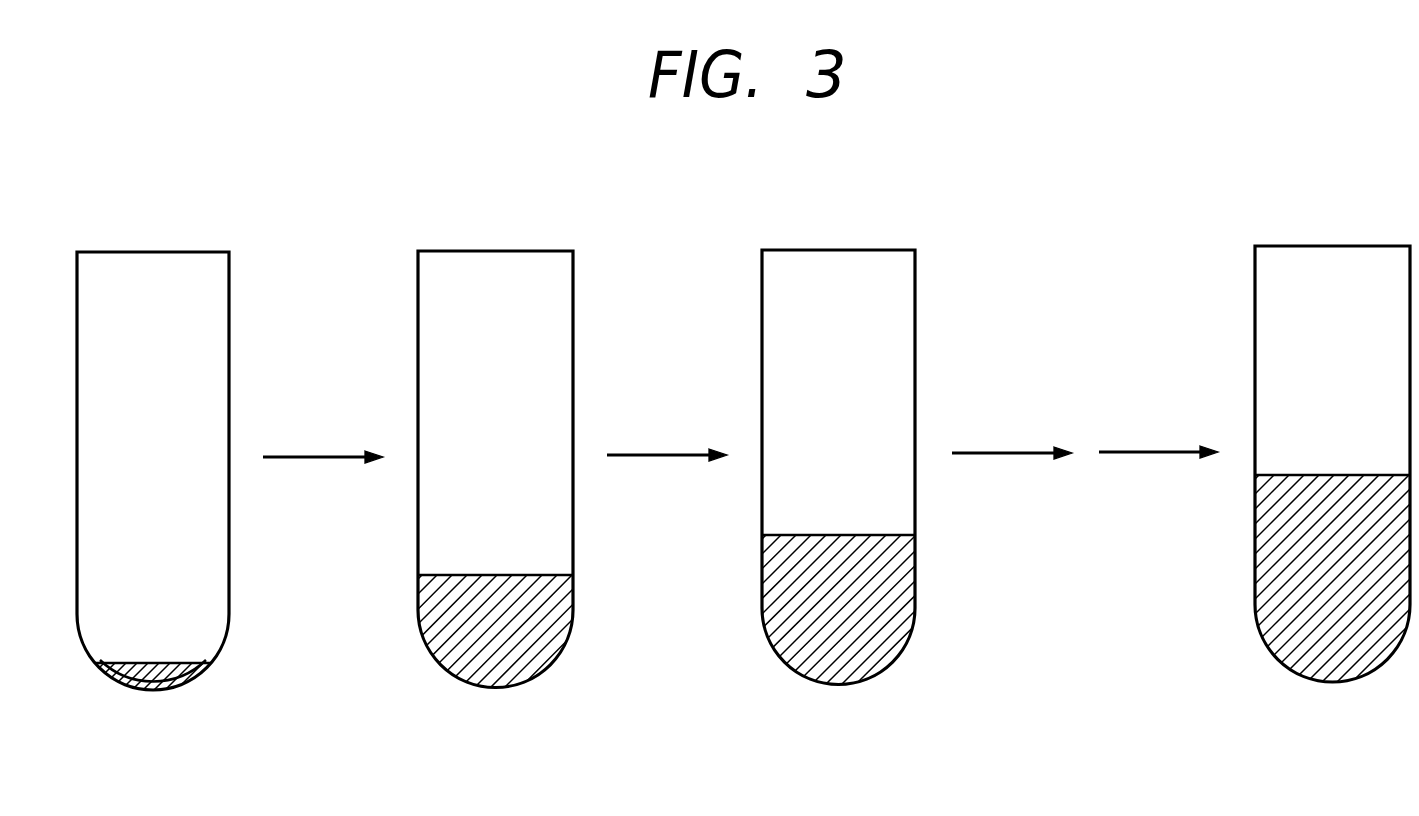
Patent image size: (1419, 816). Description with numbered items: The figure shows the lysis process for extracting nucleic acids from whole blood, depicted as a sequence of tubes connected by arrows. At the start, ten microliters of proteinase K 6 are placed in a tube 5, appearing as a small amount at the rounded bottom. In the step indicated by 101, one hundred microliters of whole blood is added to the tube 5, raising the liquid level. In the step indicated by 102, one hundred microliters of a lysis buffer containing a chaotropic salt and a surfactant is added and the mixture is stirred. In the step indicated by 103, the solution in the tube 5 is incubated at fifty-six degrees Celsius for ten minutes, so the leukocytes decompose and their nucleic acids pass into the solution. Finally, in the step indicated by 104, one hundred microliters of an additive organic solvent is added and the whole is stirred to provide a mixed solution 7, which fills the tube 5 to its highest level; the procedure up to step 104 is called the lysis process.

The tube 5 is at (183, 252).
The proteinase K 6 is at (152, 691).
The mixed solution 7 is at (1323, 662).
The step of adding whole blood 101 is at (314, 457).
The step of adding lysis buffer 102 is at (658, 455).
The incubation step 103 is at (1003, 453).
The step of adding additive solution 104 is at (1150, 452).